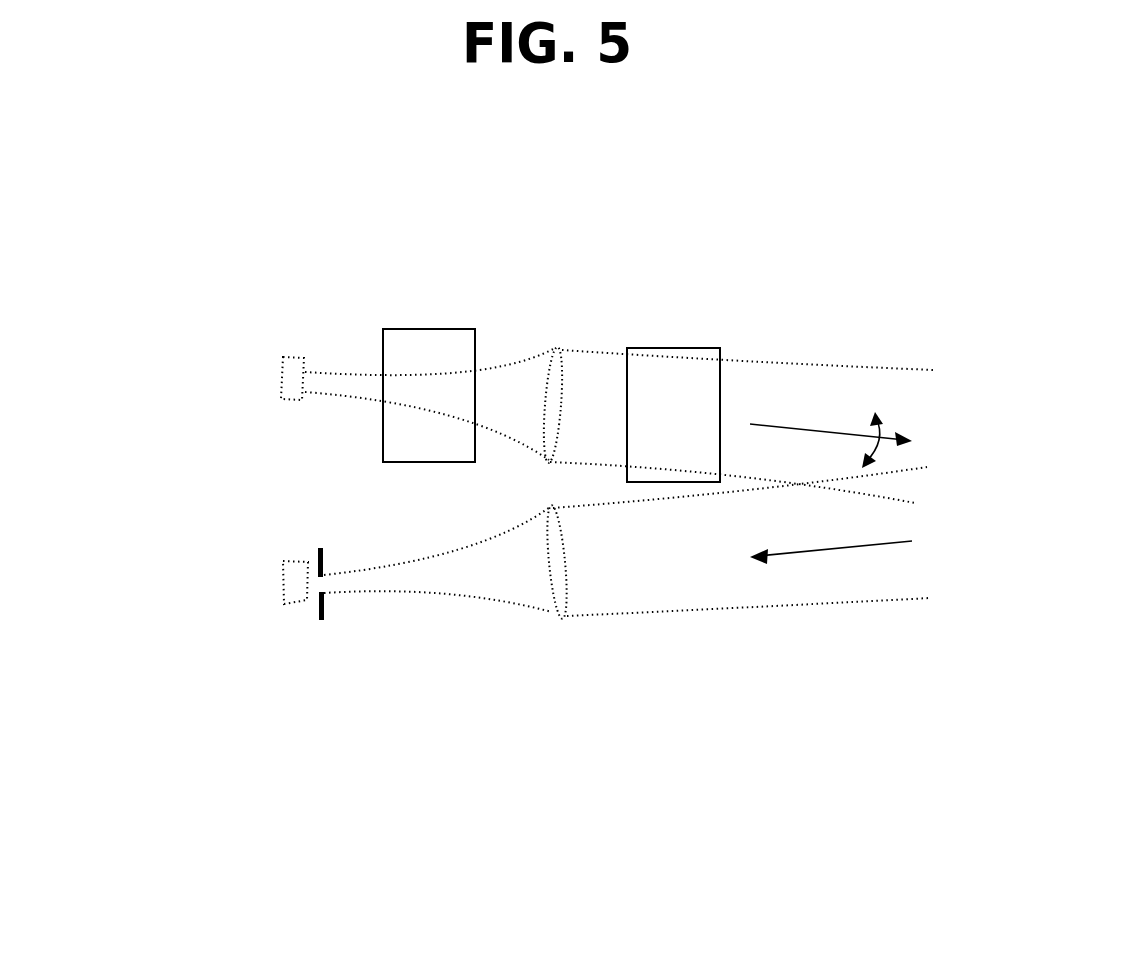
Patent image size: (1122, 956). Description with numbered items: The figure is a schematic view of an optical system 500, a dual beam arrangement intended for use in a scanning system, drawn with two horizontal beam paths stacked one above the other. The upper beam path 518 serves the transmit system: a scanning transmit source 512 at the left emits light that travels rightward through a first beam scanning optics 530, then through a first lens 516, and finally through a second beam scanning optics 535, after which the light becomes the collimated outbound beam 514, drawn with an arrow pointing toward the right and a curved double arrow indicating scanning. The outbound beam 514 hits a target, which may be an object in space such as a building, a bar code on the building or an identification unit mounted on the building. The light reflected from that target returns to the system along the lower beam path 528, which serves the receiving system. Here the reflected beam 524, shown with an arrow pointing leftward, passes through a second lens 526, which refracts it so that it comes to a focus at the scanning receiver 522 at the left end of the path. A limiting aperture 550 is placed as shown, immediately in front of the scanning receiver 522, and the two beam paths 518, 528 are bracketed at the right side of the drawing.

The optical system 500 is at (56, 852).
The scanning transmit source 512 is at (290, 377).
The outbound beam 514 is at (849, 431).
The first lens 516 is at (553, 373).
The beam path 518 is at (967, 470).
The scanning receiver 522 is at (292, 598).
The reflected beam 524 is at (810, 565).
The second lens 526 is at (561, 620).
The beam path 528 is at (967, 607).
The first beam scanning optics 530 is at (445, 337).
The second beam scanning optics 535 is at (680, 377).
The limiting aperture 550 is at (325, 605).